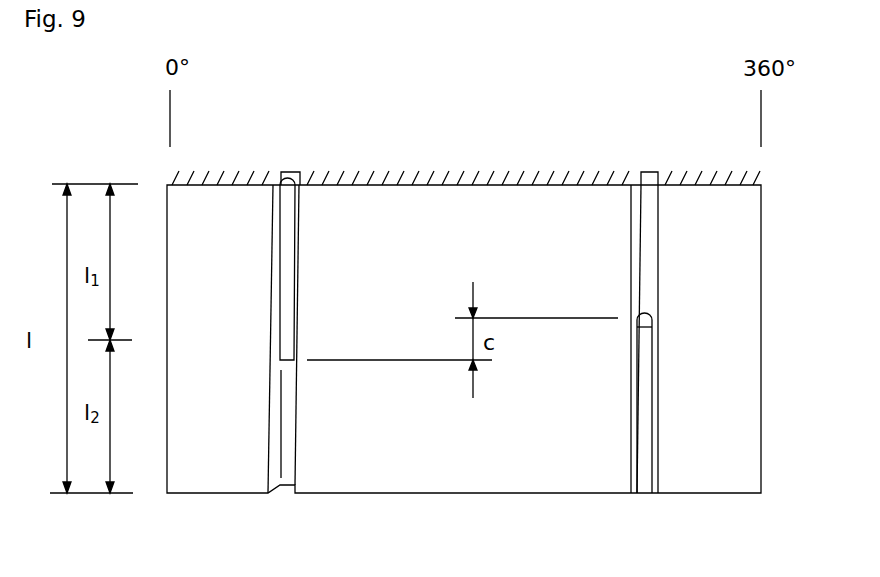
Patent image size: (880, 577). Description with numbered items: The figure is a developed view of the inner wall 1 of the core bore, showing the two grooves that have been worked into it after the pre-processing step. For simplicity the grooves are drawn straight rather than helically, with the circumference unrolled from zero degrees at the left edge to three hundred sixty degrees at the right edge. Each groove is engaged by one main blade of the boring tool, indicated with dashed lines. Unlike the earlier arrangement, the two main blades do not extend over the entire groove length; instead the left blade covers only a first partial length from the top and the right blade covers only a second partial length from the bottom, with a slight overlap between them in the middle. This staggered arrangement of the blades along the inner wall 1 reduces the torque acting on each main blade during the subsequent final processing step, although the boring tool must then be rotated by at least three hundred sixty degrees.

The inner wall of the core bore 1 is at (470, 185).